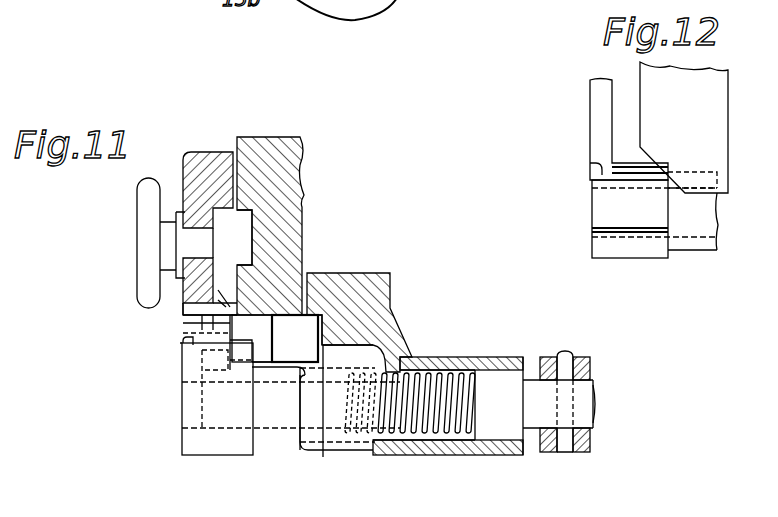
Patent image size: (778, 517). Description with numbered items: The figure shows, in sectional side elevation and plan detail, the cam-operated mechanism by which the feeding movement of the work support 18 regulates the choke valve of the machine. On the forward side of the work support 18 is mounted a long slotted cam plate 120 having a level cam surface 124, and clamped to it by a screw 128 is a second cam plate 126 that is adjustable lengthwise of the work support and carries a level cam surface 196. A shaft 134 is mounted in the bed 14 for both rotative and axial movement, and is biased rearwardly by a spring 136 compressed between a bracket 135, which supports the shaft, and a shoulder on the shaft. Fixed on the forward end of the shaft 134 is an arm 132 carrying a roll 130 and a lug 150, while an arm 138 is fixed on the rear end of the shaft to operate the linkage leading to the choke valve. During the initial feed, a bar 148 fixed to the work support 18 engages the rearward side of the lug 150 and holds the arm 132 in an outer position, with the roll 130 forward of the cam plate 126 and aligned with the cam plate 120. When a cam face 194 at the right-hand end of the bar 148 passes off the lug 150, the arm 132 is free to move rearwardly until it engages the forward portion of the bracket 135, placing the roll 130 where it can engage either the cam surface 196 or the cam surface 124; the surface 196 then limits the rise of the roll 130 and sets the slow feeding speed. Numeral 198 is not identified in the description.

In FIG. 11, the bed 14 is at (381, 290).
In FIG. 11, the work support 18 is at (296, 161).
In FIG. 11, the cam plate 120 is at (205, 153).
In FIG. 11, the level cam surface 124 is at (197, 315).
In FIG. 11, the cam plate 126 is at (243, 236).
In FIG. 11, the screw 128 is at (143, 210).
In FIG. 11, the roll 130 is at (213, 323).
In FIG. 11, the arm 132 is at (195, 442).
In FIG. 12, the arm 132 is at (600, 113).
In FIG. 11, the shaft 134 is at (280, 430).
In FIG. 12, the shaft 134 is at (622, 210).
In FIG. 11, the bracket 135 is at (310, 440).
In FIG. 11, the spring 136 is at (455, 435).
In FIG. 11, the arm 138 is at (590, 445).
In FIG. 11, the bar 148 is at (313, 335).
In FIG. 12, the bar 148 is at (720, 106).
In FIG. 11, the lug 150 is at (183, 338).
In FIG. 12, the lug 150 is at (596, 168).
In FIG. 11, the cam face 194 is at (258, 326).
In FIG. 12, the cam face 194 is at (668, 178).
In FIG. 11, the cam surface 196 is at (245, 292).
In FIG. 11, the pin 198 is at (225, 298).